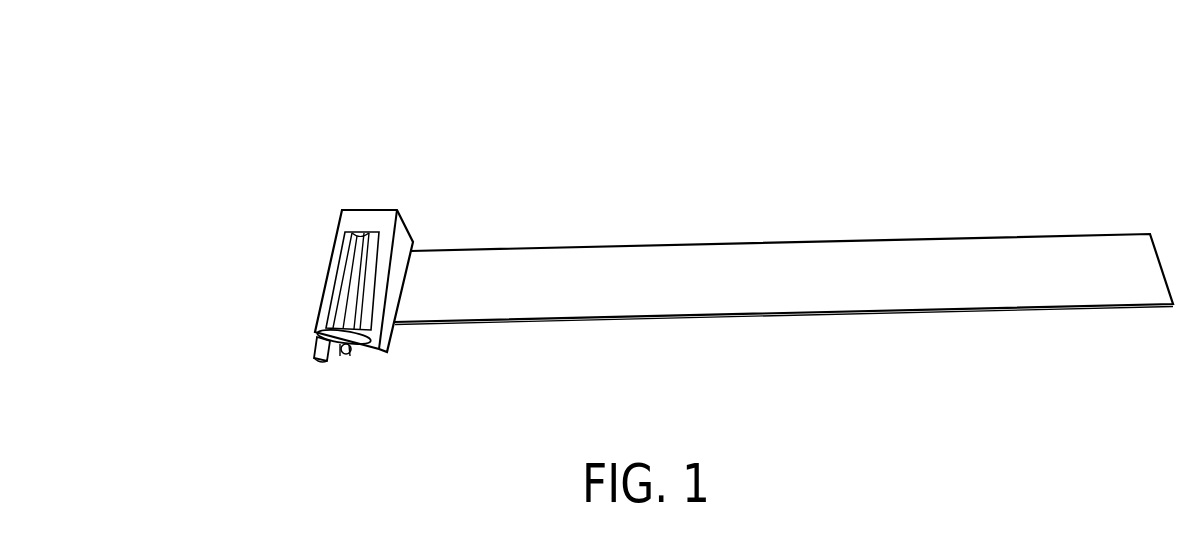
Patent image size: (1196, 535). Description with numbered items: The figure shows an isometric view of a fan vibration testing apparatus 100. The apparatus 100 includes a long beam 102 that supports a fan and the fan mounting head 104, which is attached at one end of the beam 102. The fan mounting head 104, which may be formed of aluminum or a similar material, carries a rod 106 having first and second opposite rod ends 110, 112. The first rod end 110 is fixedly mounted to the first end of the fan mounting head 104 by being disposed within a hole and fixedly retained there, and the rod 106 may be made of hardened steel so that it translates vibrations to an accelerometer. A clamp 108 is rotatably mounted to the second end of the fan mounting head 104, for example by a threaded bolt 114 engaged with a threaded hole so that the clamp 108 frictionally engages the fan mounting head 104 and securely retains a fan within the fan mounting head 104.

The fan vibration testing apparatus 100 is at (550, 133).
The beam 102 is at (582, 247).
The fan mounting head 104 is at (372, 208).
The rod 106 is at (353, 275).
The clamp 108 is at (315, 360).
The first rod end 110 is at (365, 230).
The second rod end 112 is at (348, 358).
The threaded bolt 114 is at (342, 362).